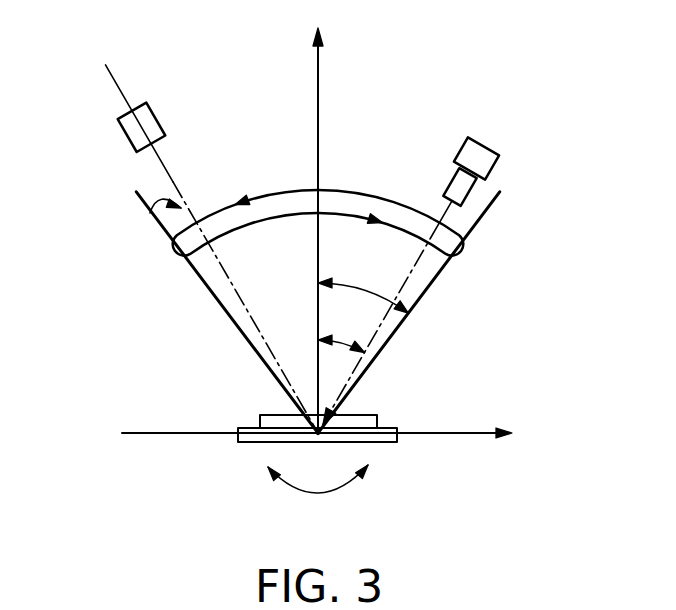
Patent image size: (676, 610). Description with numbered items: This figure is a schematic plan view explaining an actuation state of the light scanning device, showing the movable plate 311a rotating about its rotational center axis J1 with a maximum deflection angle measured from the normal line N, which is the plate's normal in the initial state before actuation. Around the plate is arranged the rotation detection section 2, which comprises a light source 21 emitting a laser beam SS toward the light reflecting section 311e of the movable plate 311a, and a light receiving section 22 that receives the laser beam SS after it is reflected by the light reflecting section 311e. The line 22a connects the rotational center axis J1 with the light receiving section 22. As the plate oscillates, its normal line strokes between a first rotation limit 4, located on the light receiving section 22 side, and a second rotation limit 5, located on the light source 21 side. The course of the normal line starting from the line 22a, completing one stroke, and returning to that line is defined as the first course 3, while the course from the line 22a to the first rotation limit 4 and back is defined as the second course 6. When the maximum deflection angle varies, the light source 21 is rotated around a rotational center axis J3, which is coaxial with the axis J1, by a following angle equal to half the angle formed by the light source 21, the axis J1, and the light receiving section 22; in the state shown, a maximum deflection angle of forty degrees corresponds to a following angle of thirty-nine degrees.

The rotation detection section 2 is at (456, 57).
The normal line N is at (320, 72).
The movable plate 311a is at (386, 452).
The light reflecting section 311e is at (377, 421).
The rotational center axis J1 is at (317, 437).
The rotational center axis J3 is at (318, 433).
The first rotation limit 4 is at (238, 331).
The second rotation limit 5 is at (480, 225).
The light receiving section 22 is at (110, 136).
The line 22a is at (118, 84).
The light source 21 is at (483, 140).
The laser beam SS is at (443, 267).
The first course 3 is at (264, 194).
The second course 6 is at (158, 198).